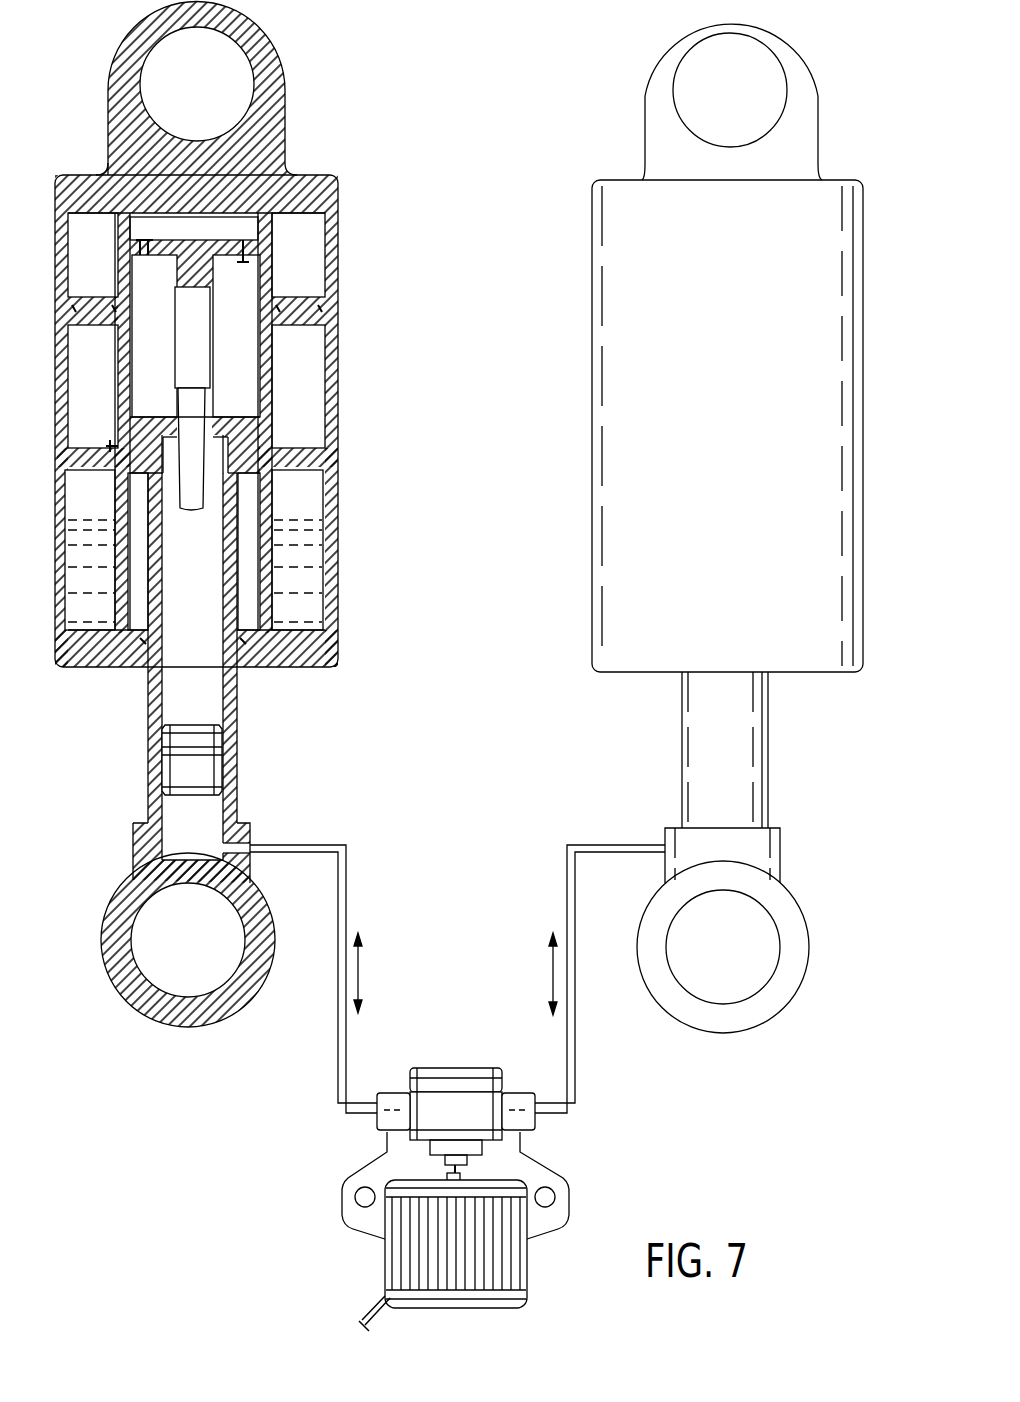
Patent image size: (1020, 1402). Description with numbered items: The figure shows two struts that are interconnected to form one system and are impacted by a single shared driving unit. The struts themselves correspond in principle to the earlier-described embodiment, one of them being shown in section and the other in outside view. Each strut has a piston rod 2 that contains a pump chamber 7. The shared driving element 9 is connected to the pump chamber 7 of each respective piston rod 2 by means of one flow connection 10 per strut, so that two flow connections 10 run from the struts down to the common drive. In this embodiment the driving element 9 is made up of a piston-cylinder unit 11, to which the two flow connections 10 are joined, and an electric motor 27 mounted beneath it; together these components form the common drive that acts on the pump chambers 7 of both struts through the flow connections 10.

The piston rod 2 is at (697, 727).
The pump chamber 7 is at (212, 697).
The driving element 9 is at (312, 1197).
The flow connection 10 is at (347, 877).
The piston-cylinder unit 11 is at (378, 1122).
The electric motor 27 is at (407, 1259).